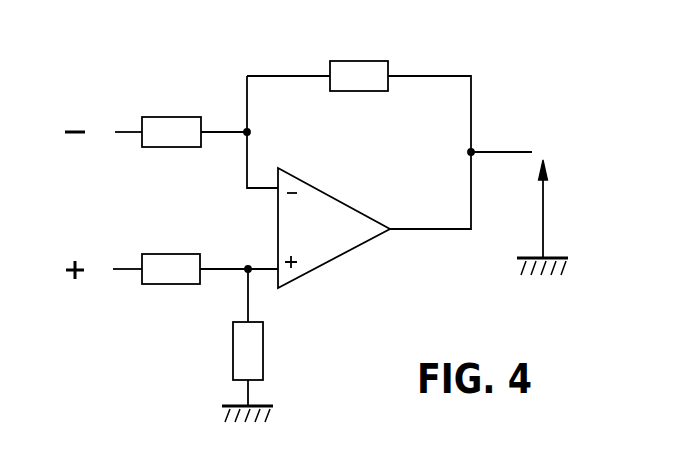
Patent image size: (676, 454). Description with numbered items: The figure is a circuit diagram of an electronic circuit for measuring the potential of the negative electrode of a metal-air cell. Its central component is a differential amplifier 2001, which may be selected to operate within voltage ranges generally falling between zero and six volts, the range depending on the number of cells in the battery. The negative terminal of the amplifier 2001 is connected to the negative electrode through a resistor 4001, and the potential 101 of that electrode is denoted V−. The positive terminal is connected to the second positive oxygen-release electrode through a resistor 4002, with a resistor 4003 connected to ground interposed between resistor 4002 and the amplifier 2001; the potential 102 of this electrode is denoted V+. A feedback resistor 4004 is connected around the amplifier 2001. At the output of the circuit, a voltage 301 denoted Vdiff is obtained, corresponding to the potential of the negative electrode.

The potential of the negative electrode 101 is at (95, 90).
The potential of the second positive oxygen-release electrode 102 is at (95, 226).
The resistor 4001 is at (171, 116).
The resistor 4002 is at (163, 286).
The resistor connected to ground 4003 is at (232, 365).
The feedback resistor 4004 is at (374, 60).
The differential amplifier 2001 is at (333, 259).
The voltage 301 is at (600, 137).